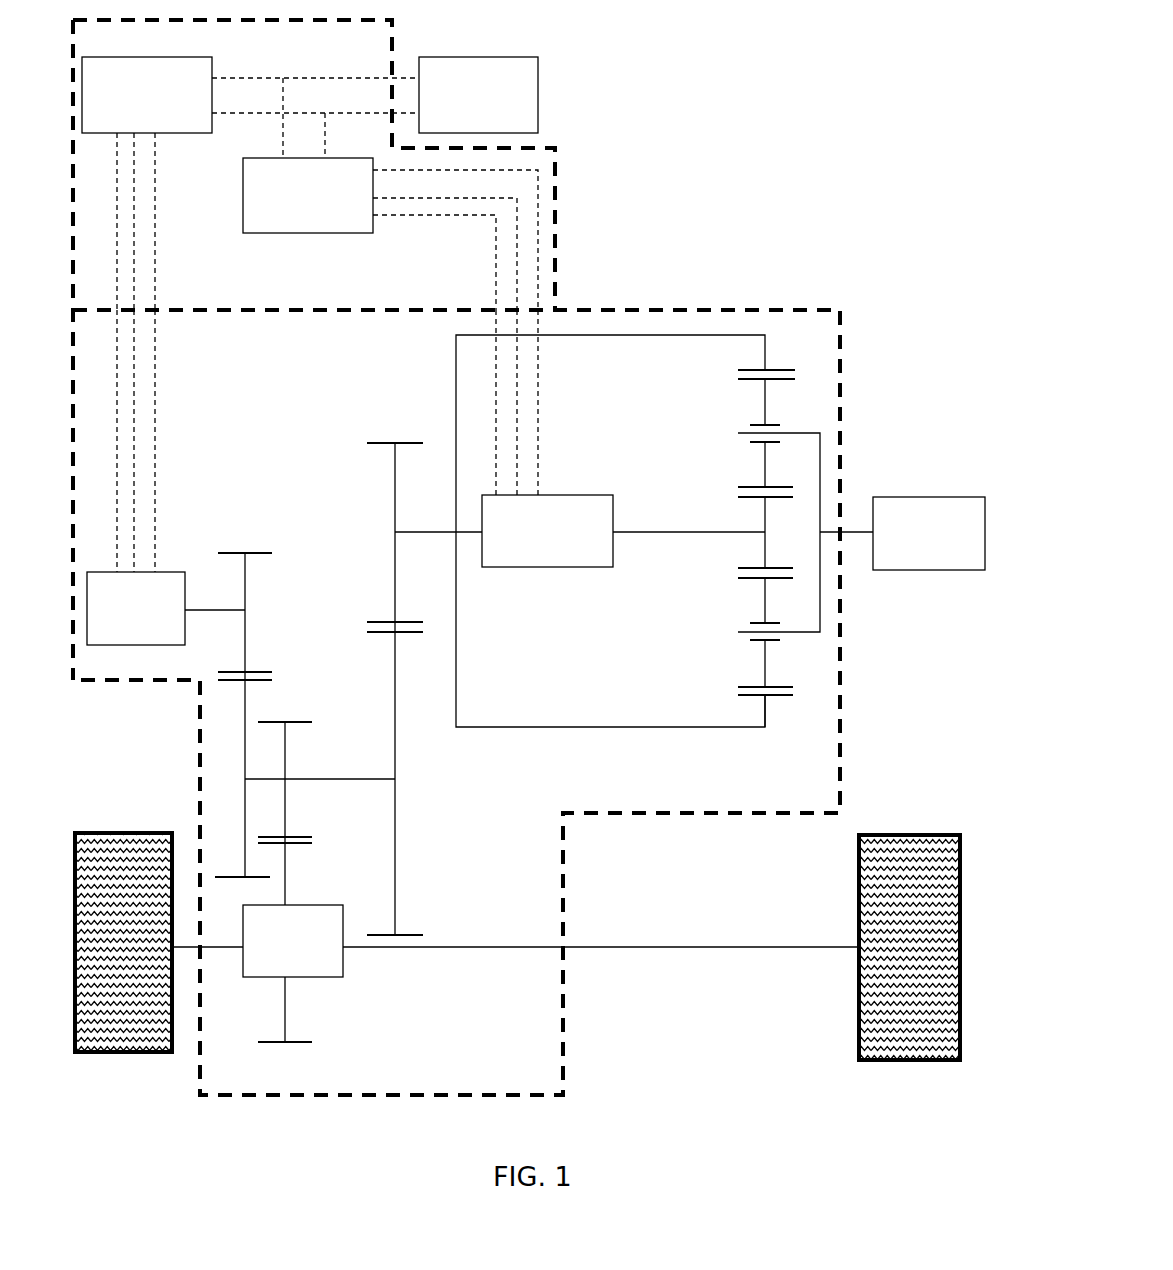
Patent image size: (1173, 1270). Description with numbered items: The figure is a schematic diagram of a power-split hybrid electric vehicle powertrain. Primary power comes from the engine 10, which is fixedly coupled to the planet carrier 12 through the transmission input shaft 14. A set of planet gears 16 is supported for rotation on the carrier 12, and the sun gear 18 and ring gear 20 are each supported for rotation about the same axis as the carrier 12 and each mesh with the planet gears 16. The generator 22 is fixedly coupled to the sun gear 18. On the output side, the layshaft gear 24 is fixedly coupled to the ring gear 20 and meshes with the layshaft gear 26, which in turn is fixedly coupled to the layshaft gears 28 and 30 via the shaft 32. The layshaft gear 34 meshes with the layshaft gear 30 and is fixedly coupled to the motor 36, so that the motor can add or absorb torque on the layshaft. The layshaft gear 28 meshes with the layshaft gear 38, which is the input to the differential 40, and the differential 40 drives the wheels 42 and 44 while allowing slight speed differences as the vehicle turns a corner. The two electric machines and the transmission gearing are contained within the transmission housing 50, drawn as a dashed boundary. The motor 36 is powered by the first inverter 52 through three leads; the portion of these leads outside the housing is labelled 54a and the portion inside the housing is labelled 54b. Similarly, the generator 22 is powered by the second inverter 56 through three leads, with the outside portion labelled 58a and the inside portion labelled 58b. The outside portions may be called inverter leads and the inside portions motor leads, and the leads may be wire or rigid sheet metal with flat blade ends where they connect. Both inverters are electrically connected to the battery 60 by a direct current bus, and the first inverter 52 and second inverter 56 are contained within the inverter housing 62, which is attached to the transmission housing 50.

The engine 10 is at (930, 497).
The planet carrier 12 is at (820, 600).
The transmission input shaft 14 is at (853, 532).
The planet gears 16 is at (762, 663).
The sun gear 18 is at (760, 520).
The ring gear 20 is at (767, 717).
The generator 22 is at (573, 567).
The layshaft gear 24 is at (395, 508).
The layshaft gear 26 is at (395, 887).
The layshaft gear 28 is at (287, 757).
The layshaft gear 30 is at (240, 750).
The shaft 32 is at (327, 782).
The layshaft gear 34 is at (248, 587).
The motor 36 is at (157, 645).
The layshaft gear 38 is at (288, 1012).
The differential 40 is at (343, 965).
The wheel 42 is at (98, 833).
The wheel 44 is at (858, 972).
The transmission housing 50 is at (728, 310).
The first inverter 52 is at (170, 133).
The inverter leads 54a is at (134, 240).
The motor leads 54b is at (134, 429).
The second inverter 56 is at (327, 233).
The inverter leads 58a is at (518, 255).
The motor leads 58b is at (517, 387).
The battery 60 is at (538, 105).
The inverter housing 62 is at (555, 157).